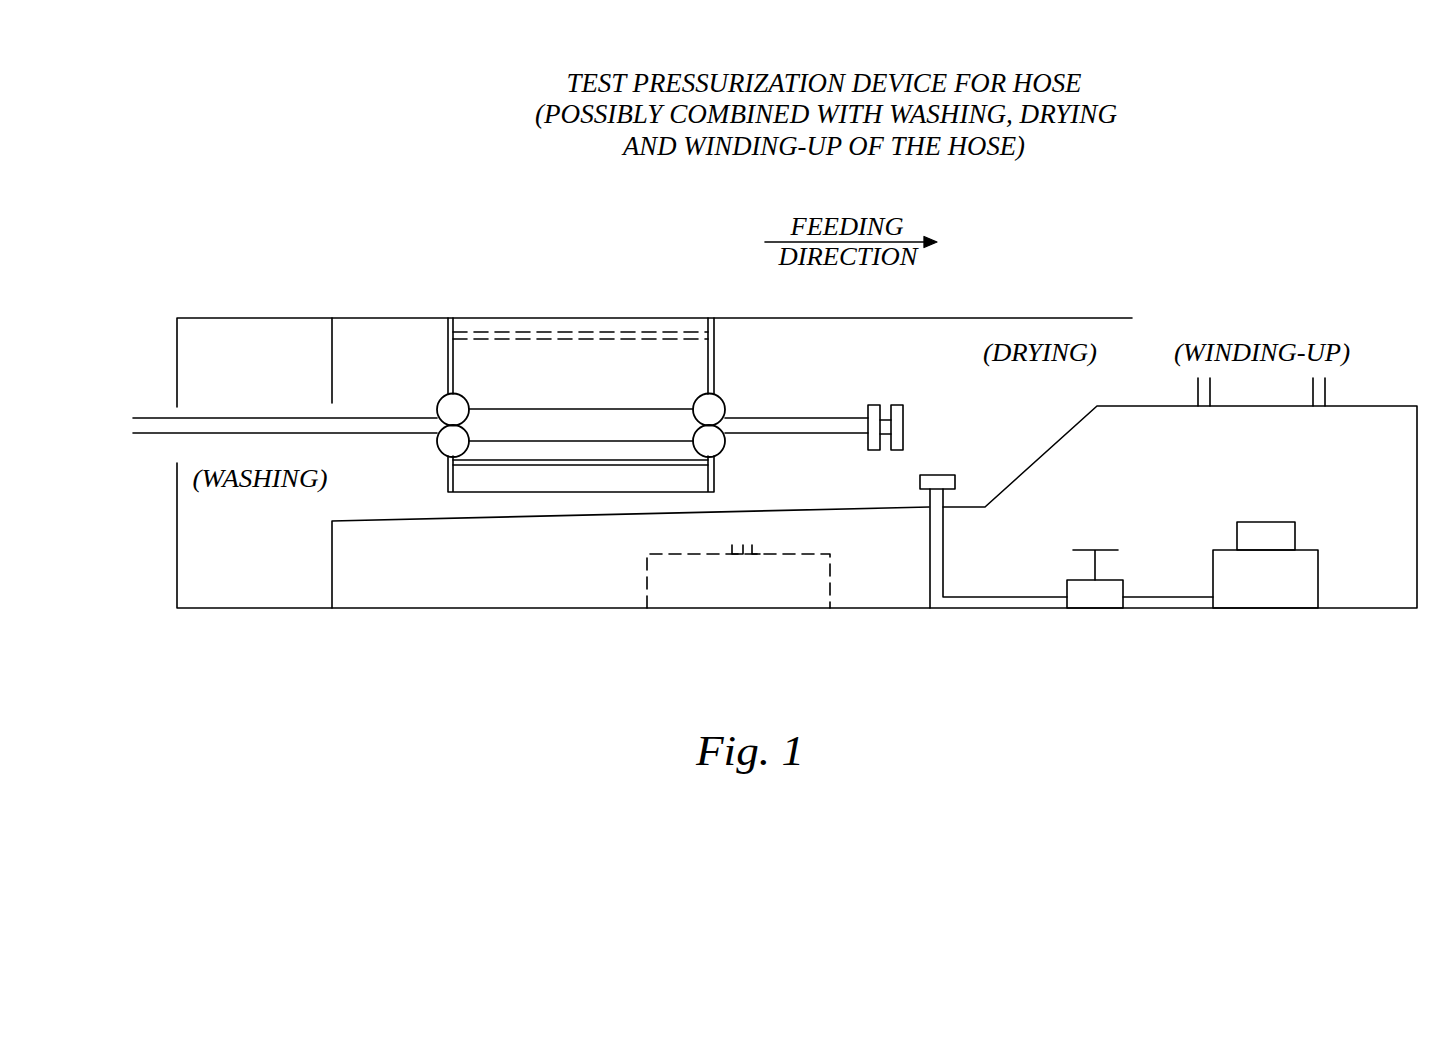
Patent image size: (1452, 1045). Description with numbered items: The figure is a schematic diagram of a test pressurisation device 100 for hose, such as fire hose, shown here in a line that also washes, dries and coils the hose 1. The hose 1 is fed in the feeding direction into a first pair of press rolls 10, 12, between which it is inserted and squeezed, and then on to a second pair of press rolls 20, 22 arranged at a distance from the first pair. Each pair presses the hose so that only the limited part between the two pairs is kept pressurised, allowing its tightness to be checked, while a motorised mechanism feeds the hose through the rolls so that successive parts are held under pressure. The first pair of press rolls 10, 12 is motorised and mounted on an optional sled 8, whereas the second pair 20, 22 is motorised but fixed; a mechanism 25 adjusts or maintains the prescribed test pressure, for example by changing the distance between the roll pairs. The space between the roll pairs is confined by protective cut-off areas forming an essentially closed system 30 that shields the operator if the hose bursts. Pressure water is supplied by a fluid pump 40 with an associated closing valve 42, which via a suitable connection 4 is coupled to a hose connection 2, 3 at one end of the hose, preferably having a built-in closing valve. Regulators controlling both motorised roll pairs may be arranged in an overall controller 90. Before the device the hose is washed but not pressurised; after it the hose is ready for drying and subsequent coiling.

The hose 1 is at (268, 418).
The hose connection 2 is at (871, 405).
The hose connection 3 is at (897, 405).
The connection 4 is at (940, 475).
The sled 8 is at (508, 467).
The first pair of press rolls 10 is at (440, 400).
The first pair of press rolls 12 is at (438, 455).
The second pair of press rolls 20 is at (722, 397).
The second pair of press rolls 22 is at (722, 453).
The mechanism for adjusting and/or maintaining the prescribed test pressure 25 is at (630, 332).
The essentially closed system 30 is at (557, 494).
The fluid pump/water pump 40 is at (1265, 522).
The closing valve 42 is at (1097, 608).
The controller 90 is at (746, 608).
The test pressurisation device 100 is at (555, 307).